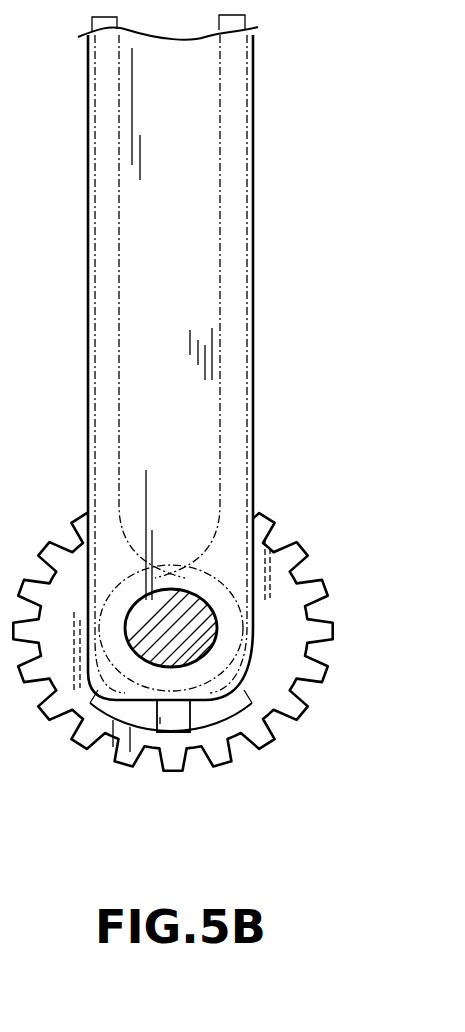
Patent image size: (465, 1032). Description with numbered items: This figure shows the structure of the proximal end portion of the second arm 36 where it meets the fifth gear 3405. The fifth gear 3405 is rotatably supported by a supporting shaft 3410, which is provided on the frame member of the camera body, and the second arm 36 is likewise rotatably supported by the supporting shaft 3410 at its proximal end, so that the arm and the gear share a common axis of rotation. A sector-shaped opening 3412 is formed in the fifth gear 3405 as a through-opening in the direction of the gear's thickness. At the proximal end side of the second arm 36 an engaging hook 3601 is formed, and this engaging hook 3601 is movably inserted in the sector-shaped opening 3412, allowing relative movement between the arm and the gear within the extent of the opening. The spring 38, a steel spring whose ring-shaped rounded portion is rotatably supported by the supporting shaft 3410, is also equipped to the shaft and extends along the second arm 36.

The second arm 36 is at (195, 262).
The spring 38 is at (88, 315).
The fifth gear 3405 is at (307, 632).
The supporting shaft 3410 is at (176, 608).
The sector-shaped opening 3412 is at (218, 717).
The engaging hook 3601 is at (172, 718).